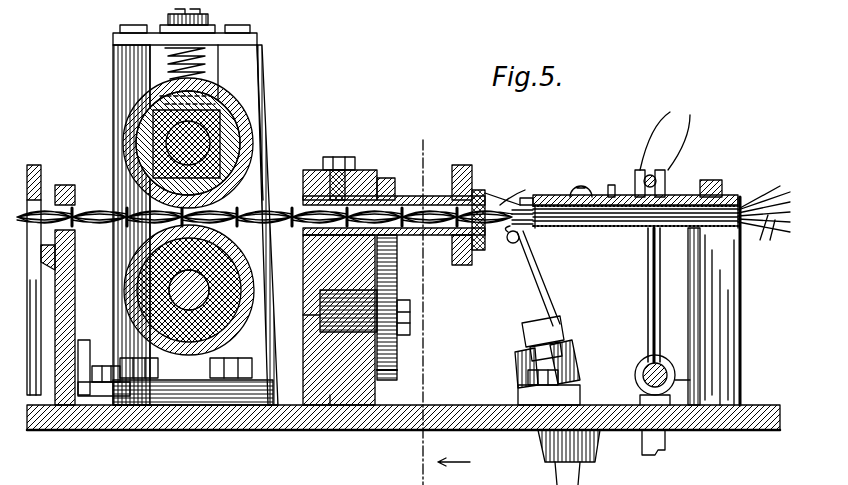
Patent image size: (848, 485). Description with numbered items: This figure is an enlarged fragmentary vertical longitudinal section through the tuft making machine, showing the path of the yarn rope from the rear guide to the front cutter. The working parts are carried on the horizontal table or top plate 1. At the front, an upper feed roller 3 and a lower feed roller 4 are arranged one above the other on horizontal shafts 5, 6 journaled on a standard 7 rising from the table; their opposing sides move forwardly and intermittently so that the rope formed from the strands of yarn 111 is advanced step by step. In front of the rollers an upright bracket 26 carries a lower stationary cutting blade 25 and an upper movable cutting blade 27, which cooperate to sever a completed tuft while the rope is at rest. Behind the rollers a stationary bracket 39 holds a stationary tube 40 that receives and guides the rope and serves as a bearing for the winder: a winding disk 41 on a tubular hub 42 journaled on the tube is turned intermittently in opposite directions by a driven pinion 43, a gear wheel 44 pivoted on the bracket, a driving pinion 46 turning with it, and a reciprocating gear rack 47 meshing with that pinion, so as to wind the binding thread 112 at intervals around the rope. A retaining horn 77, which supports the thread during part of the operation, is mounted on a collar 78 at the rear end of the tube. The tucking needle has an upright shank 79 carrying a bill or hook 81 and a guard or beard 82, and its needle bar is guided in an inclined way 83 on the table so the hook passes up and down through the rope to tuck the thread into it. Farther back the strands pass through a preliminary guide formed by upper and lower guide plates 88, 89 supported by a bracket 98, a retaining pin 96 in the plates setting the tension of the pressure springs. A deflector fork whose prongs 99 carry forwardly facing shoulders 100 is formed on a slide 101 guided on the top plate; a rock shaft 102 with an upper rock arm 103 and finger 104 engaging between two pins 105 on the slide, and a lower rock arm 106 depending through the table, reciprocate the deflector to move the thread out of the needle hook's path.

The table or top plate 1 is at (275, 418).
The upper feed roller 3 is at (218, 98).
The lower feed roller 4 is at (189, 290).
The shaft of upper feed roller 5 is at (155, 128).
The shaft of lower feed roller 6 is at (190, 345).
The standard 7 is at (258, 60).
The lower stationary cutting blade 25 is at (50, 378).
The upright bracket 26 is at (70, 295).
The upper movable cutting blade 27 is at (34, 165).
The stationary bracket 39 is at (328, 405).
The stationary tube 40 is at (300, 243).
The winding disk 41 is at (460, 165).
The tubular hub 42 is at (413, 196).
The driven pinion 43 is at (385, 178).
The gear wheel 44 is at (397, 370).
The driving pinion 46 is at (350, 340).
The gear rack 47 is at (330, 285).
The retaining horn 77 is at (505, 190).
The collar 78 is at (472, 262).
The needle shank 79 is at (545, 312).
The bill or hook 81 is at (519, 237).
The guard or beard 82 is at (512, 243).
The inclined way 83 is at (540, 448).
The upper guide plate 88 is at (698, 228).
The lower guide plate 89 is at (722, 262).
The retaining pin 96 is at (612, 228).
The bracket 98 is at (742, 343).
The prong of deflector fork 99 is at (526, 205).
The forwardly facing shoulder 100 is at (548, 196).
The deflector slide 101 is at (725, 200).
The deflector rock shaft 102 is at (635, 383).
The upper rock arm 103 is at (648, 315).
The finger 104 is at (655, 170).
The pins 105 is at (669, 134).
The lower rock arm 106 is at (665, 450).
The strands of yarn 111 is at (764, 221).
The binding thread 112 is at (72, 228).